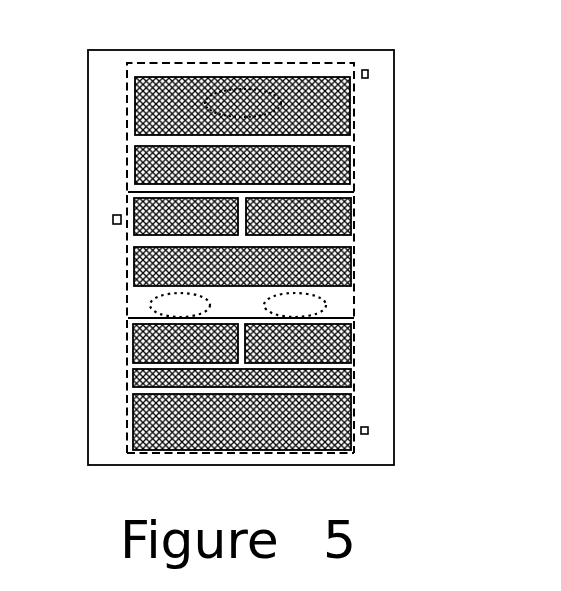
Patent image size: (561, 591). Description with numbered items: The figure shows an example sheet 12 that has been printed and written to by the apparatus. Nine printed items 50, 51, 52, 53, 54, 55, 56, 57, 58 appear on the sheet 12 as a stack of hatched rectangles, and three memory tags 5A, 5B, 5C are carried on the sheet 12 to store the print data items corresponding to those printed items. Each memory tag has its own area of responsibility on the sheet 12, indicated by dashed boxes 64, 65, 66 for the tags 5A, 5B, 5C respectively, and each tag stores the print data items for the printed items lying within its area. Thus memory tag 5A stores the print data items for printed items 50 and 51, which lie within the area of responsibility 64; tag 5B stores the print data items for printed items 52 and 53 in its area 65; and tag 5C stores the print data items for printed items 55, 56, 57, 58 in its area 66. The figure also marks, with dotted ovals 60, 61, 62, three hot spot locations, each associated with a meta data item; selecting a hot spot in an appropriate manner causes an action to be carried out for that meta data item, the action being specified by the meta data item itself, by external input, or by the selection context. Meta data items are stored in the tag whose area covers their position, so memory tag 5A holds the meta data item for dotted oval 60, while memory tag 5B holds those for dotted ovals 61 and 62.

The sheet 12 is at (93, 44).
The printed item 50 is at (353, 116).
The printed item 51 is at (353, 161).
The printed item 52 is at (132, 201).
The printed item 53 is at (351, 216).
The printed item 54 is at (351, 268).
The printed item 55 is at (133, 342).
The printed item 56 is at (351, 342).
The printed item 57 is at (133, 377).
The printed item 58 is at (133, 421).
The dotted oval 60 is at (207, 107).
The dotted oval 61 is at (150, 305).
The dotted oval 62 is at (326, 305).
The dashed box 64 is at (354, 143).
The dashed box 65 is at (354, 292).
The dashed box 66 is at (354, 454).
The memory tag 5A is at (368, 74).
The memory tag 5B is at (113, 219).
The memory tag 5C is at (368, 430).